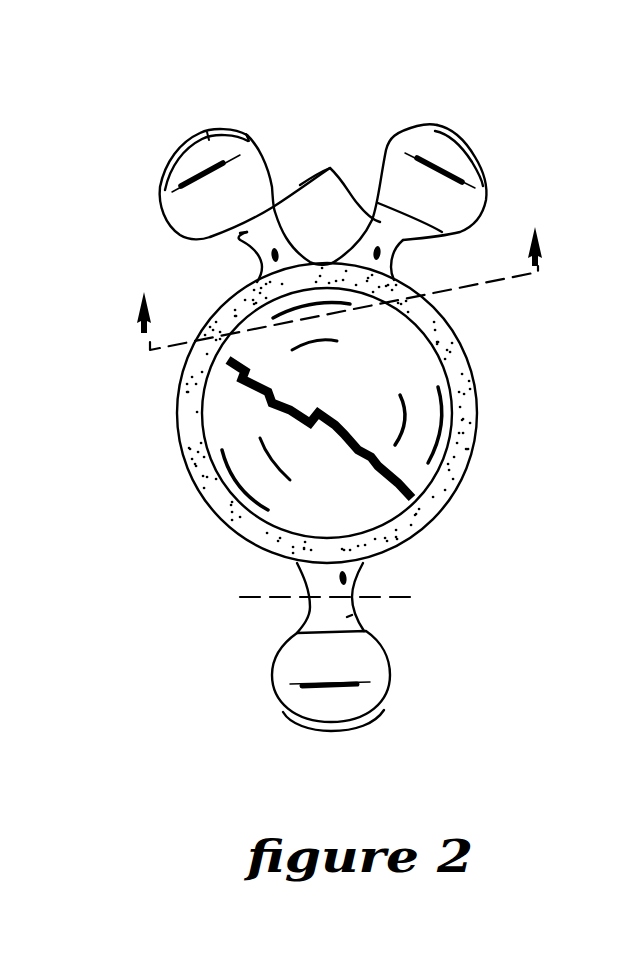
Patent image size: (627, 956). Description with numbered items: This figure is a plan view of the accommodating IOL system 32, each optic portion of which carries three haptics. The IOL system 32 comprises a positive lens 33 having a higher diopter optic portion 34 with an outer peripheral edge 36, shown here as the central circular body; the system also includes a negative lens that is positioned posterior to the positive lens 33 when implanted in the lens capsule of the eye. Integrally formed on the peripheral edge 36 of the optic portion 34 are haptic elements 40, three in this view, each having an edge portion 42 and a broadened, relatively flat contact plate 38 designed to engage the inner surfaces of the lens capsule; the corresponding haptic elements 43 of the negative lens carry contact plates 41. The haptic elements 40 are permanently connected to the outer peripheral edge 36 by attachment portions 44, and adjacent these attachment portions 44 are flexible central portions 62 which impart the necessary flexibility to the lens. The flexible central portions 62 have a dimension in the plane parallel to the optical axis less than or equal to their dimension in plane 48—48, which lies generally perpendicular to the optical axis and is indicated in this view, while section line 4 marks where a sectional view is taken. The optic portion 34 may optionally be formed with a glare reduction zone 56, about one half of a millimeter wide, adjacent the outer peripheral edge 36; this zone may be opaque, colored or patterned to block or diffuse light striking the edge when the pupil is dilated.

The IOL system 32 is at (326, 423).
The positive lens 33 is at (326, 413).
The higher diopter optic portion 34 is at (220, 420).
The outer peripheral edge 36 is at (185, 472).
The contact plate 38 is at (195, 160).
The haptic element 40 is at (162, 180).
The contact plate 41 is at (207, 132).
The edge portion 42 is at (331, 167).
The haptic element 43 is at (248, 136).
The attachment portion 44 is at (394, 278).
The plane 48- 48 is at (330, 596).
The glare reduction zone 56 is at (460, 472).
The flexible central portion 62 is at (240, 233).
The section line 4- 4 is at (340, 286).